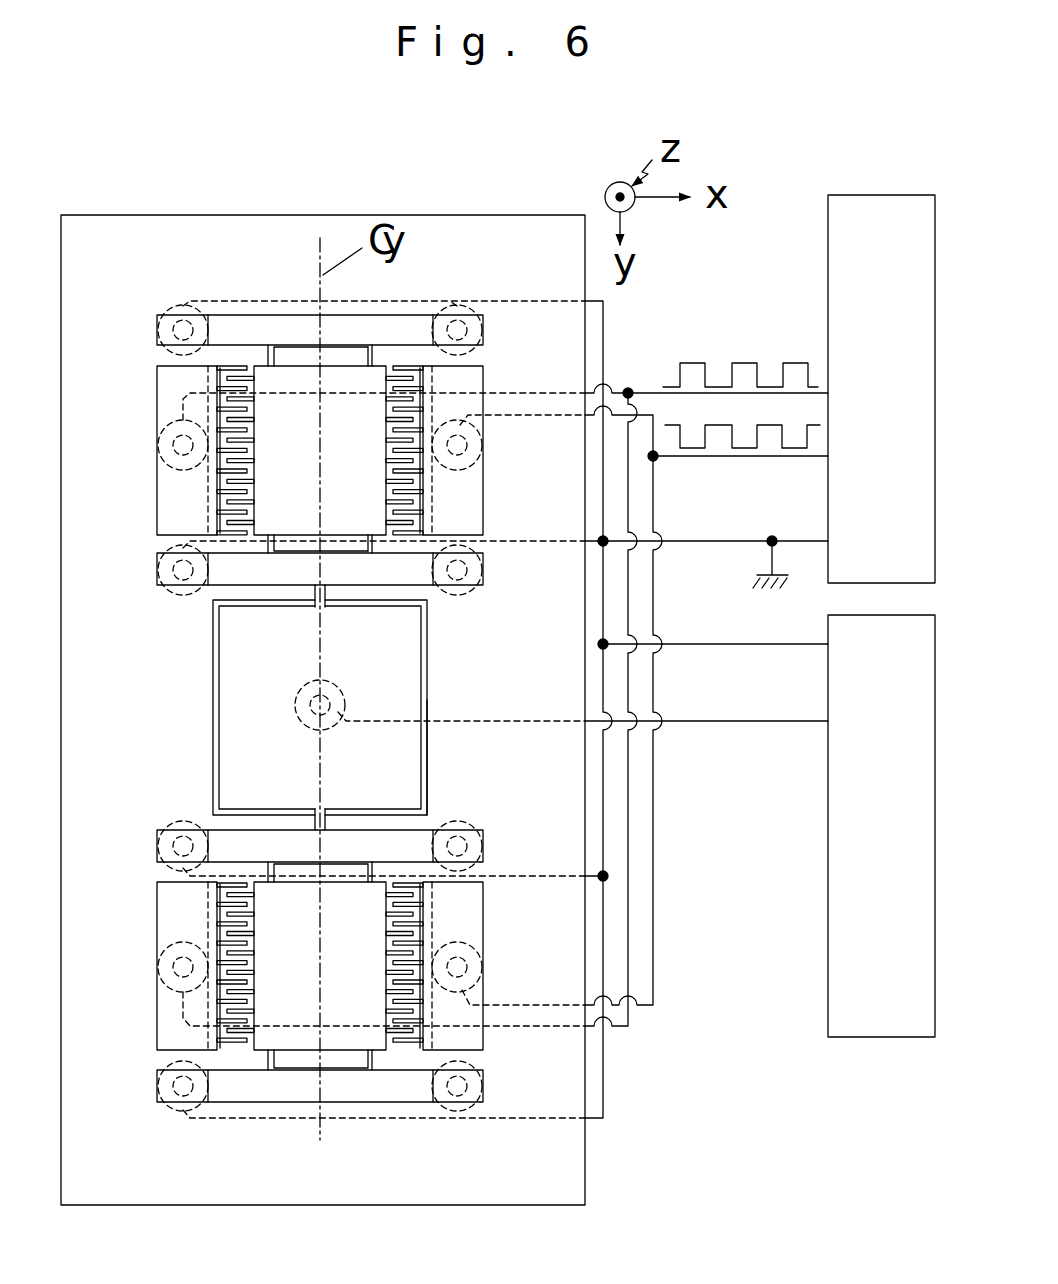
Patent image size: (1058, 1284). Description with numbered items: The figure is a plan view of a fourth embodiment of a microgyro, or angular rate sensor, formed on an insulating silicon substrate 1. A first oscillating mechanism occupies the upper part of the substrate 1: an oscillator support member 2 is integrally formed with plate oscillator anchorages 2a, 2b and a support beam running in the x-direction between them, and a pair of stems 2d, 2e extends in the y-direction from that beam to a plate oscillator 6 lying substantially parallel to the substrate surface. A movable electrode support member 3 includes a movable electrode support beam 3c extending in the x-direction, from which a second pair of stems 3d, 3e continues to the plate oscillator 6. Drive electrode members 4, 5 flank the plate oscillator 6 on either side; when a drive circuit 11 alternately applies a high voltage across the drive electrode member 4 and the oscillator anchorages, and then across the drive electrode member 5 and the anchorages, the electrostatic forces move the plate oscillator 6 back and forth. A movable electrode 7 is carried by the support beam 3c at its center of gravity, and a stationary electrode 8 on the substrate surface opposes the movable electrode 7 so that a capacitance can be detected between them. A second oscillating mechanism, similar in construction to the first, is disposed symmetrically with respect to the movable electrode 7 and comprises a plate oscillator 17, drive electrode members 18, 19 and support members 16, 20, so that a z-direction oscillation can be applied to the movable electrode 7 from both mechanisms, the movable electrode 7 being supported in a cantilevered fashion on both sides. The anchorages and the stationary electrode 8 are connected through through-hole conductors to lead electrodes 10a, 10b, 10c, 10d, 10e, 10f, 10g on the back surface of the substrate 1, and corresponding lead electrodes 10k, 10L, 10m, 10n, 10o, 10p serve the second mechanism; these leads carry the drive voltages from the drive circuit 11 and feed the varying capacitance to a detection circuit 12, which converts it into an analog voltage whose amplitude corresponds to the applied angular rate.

The silicon substrate 1 is at (198, 215).
The oscillator support member 2 is at (225, 313).
The plate oscillator anchorage 2a is at (160, 330).
The plate oscillator anchorage 2b is at (485, 333).
The stem 2d is at (268, 360).
The stem 2e is at (368, 358).
The movable electrode support member 3 is at (220, 586).
The movable electrode support beam 3c is at (345, 572).
The stem 3d is at (268, 548).
The stem 3e is at (368, 548).
The drive electrode member 4 is at (154, 478).
The drive electrode member 5 is at (488, 426).
The plate oscillator 6 is at (314, 473).
The movable electrode 7 is at (264, 708).
The stationary electrode 8 is at (432, 762).
The lead electrode 10a is at (180, 305).
The lead electrode 10b is at (476, 350).
The lead electrode 10c is at (165, 428).
The lead electrode 10d is at (476, 464).
The lead electrode 10e is at (165, 558).
The lead electrode 10f is at (472, 588).
The lead electrode 10g is at (304, 688).
The electrode pad 10k is at (180, 822).
The electrode pad 10L is at (470, 866).
The electrode pad 10m is at (165, 952).
The electrode pad 10n is at (470, 990).
The electrode pad 10o is at (165, 1072).
The electrode pad 10p is at (477, 1117).
The drive circuit 11 is at (858, 195).
The detection circuit 12 is at (826, 1040).
The support member 16 is at (251, 826).
The plate oscillator 17 is at (308, 958).
The drive electrode member 18 is at (154, 1002).
The drive electrode member 19 is at (488, 932).
The support member 20 is at (250, 1104).